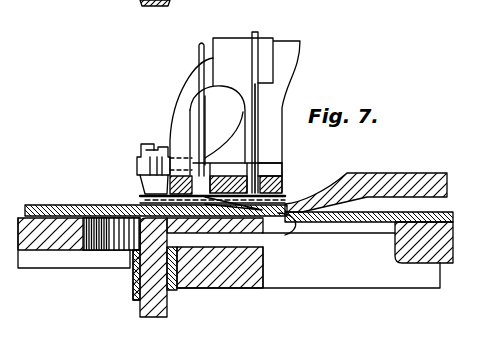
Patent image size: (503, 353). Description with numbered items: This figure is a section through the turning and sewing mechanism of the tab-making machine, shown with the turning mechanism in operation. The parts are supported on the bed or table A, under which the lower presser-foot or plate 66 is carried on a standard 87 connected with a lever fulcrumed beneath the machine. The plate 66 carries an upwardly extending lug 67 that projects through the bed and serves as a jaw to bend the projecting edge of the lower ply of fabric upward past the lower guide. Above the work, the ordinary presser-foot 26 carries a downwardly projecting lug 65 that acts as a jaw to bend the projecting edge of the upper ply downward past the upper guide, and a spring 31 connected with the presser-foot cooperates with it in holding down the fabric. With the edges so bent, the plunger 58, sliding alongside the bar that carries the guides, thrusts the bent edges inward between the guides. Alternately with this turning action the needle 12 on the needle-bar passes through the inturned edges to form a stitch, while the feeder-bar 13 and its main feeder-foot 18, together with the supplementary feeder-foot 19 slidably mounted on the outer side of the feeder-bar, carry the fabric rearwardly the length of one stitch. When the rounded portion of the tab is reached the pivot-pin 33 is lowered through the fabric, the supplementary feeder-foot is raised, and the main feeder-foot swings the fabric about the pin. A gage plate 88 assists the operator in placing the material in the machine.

The needle 12 is at (252, 69).
The feeder-bar 13 is at (261, 43).
The feeder-foot 18 is at (260, 108).
The supplementary feeder-foot 19 is at (178, 128).
The presser-foot 26 is at (275, 173).
The spring 31 is at (137, 182).
The pivot-pin 33 is at (199, 57).
The plunger 58 is at (367, 175).
The lug 65 is at (282, 199).
The under presser plate 66 is at (258, 233).
The lug 67 is at (291, 229).
The standard 87 is at (144, 314).
The gage plate 88 is at (58, 207).
The bed A is at (47, 240).